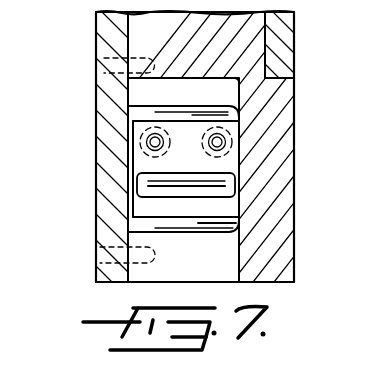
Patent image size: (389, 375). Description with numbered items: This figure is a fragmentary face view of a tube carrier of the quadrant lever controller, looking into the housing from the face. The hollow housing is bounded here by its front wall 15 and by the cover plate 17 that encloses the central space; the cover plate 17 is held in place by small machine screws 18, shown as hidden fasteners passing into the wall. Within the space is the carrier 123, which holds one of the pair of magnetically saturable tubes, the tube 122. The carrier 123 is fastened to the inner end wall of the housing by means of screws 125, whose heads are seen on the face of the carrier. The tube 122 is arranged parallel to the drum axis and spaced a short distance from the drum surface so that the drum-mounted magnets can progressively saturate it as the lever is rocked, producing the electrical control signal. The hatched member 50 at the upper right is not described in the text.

The side wall of housing 17 is at (100, 36).
The fastener bores 18 is at (104, 69).
The mounting block 123 is at (133, 134).
The holes 125 is at (130, 165).
The spacer body 122 is at (227, 175).
The top cover 50 is at (285, 38).
The housing wall 15 is at (285, 253).